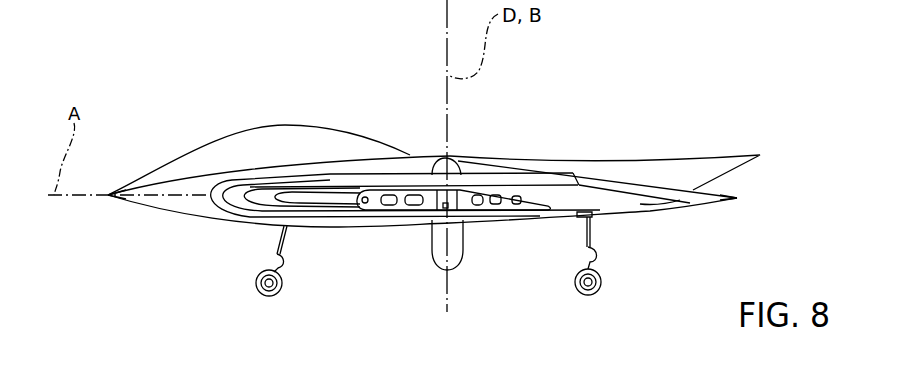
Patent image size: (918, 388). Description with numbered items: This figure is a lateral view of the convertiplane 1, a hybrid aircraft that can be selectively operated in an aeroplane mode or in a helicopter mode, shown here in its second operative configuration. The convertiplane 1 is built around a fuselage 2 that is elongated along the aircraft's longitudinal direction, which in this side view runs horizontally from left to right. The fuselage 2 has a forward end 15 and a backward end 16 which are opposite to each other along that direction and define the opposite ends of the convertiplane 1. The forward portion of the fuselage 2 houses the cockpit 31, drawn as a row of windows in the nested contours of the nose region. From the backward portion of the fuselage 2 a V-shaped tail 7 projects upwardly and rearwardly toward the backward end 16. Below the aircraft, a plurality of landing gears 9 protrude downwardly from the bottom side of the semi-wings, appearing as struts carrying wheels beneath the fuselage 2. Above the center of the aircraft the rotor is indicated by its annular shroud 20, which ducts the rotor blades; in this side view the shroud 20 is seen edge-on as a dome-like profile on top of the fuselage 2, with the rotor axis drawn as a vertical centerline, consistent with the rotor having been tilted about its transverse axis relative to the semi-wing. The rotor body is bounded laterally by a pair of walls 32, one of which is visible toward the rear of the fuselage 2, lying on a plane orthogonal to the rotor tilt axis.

The convertiplane 1 is at (539, 120).
The fuselage 2 is at (203, 204).
The V-shaped tail 7 is at (679, 162).
The landing gear 9 is at (281, 280).
The forward end 15 is at (108, 197).
The backward end 16 is at (742, 200).
The annular shroud 20 is at (409, 184).
The cockpit 31 is at (186, 168).
The wall 32 is at (568, 204).